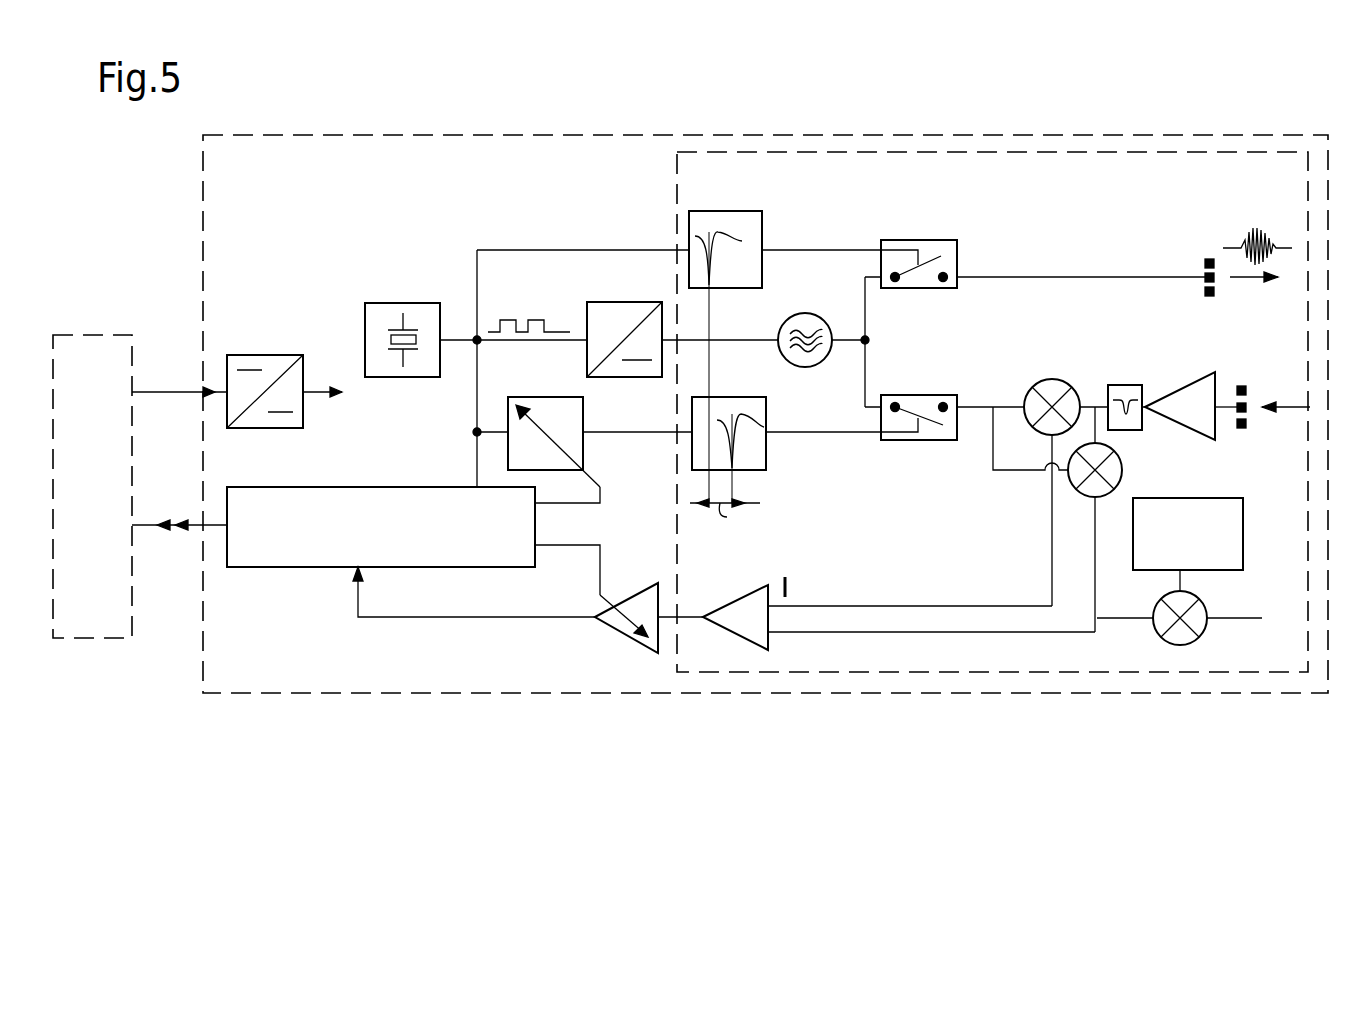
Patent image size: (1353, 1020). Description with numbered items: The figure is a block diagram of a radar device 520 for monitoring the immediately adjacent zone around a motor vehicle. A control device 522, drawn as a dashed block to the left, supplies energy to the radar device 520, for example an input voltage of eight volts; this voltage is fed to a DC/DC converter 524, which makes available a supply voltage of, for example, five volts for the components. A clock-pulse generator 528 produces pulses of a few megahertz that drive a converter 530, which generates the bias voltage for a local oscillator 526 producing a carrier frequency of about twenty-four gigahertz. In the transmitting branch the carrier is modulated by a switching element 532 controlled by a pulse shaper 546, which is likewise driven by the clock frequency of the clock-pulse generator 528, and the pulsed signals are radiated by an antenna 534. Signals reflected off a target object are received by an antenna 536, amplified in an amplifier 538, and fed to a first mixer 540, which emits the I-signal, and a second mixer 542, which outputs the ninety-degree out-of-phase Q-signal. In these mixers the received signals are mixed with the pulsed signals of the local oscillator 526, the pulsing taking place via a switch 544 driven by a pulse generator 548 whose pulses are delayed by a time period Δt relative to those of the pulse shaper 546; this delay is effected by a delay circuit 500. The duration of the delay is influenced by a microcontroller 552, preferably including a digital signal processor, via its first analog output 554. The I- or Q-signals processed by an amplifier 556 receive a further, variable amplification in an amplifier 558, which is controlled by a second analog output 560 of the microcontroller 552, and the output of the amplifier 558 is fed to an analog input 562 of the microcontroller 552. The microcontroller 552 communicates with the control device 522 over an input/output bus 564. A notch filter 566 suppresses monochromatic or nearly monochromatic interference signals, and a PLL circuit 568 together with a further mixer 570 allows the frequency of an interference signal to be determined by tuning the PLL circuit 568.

The delay circuit 500 is at (578, 445).
The radar device 520 is at (538, 143).
The control device 522 is at (98, 613).
The DC/DC converter 524 is at (258, 352).
The local oscillator 526 is at (805, 362).
The clock-pulse generator 528 is at (385, 310).
The converter 530 is at (596, 308).
The switching element 532 is at (935, 241).
The antenna 534 is at (1203, 258).
The antenna 536 is at (1241, 386).
The amplifier 538 is at (1210, 435).
The first mixer 540 is at (1050, 380).
The second mixer 542 is at (1122, 472).
The switch 544 is at (932, 441).
The pulse shaper 546 is at (742, 215).
The pulse generator 548 is at (766, 455).
The microcontroller 552 is at (273, 558).
The first analog output 554 is at (532, 510).
The amplifier 556 is at (747, 602).
The amplifier 558 is at (650, 593).
The second analog output 560 is at (532, 546).
The analog input 562 is at (357, 565).
The input/output bus 564 is at (173, 533).
The notch filter 566 is at (1128, 385).
The PLL circuit 568 is at (1233, 542).
The further mixer 570 is at (1200, 630).